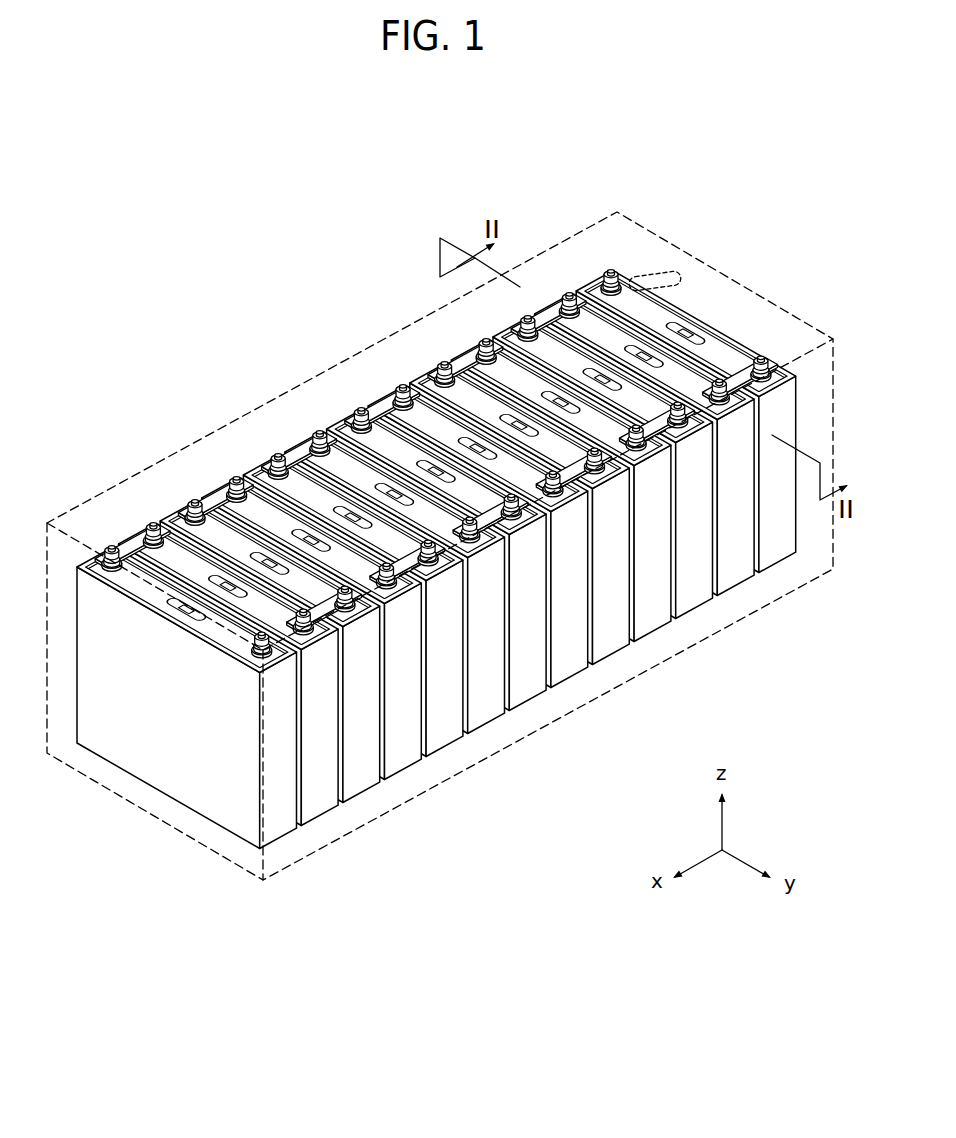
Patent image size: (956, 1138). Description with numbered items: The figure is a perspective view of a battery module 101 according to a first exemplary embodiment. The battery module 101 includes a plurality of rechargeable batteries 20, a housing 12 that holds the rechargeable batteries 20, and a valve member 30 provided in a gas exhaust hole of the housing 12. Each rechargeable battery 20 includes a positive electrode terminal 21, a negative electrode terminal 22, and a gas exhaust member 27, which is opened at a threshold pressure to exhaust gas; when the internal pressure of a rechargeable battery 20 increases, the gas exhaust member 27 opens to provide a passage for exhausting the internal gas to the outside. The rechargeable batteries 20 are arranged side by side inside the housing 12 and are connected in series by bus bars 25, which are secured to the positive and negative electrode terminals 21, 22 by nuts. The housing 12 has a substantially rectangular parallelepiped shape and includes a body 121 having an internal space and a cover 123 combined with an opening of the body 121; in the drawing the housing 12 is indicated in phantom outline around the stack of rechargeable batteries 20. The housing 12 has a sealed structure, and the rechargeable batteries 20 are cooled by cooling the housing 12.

The battery module 101 is at (317, 220).
The housing 12 is at (445, 545).
The body 121 is at (735, 598).
The cover 123 is at (700, 281).
The rechargeable battery 20 is at (429, 569).
The positive electrode terminal 21 is at (110, 553).
The negative electrode terminal 22 is at (152, 531).
The bus bar 25 is at (219, 497).
The gas exhaust member 27 is at (347, 513).
The valve member 30 is at (651, 276).